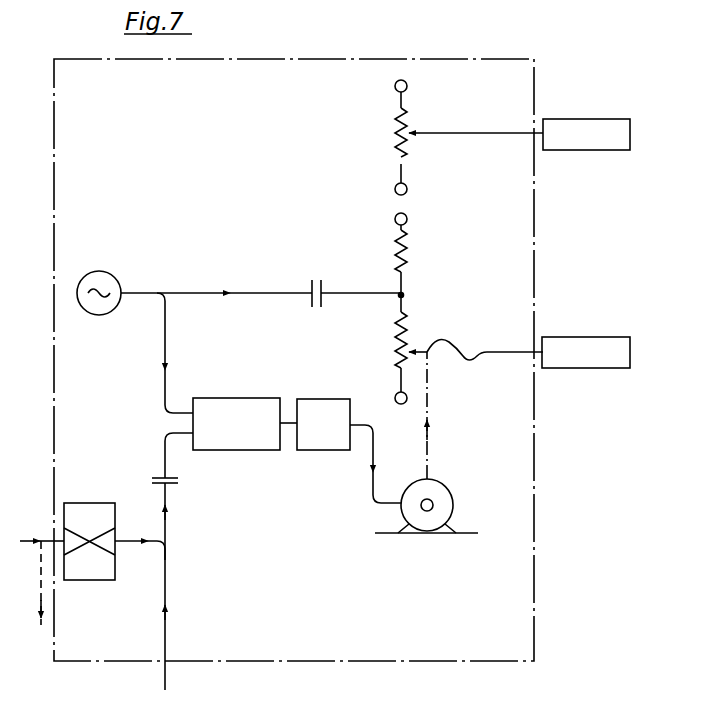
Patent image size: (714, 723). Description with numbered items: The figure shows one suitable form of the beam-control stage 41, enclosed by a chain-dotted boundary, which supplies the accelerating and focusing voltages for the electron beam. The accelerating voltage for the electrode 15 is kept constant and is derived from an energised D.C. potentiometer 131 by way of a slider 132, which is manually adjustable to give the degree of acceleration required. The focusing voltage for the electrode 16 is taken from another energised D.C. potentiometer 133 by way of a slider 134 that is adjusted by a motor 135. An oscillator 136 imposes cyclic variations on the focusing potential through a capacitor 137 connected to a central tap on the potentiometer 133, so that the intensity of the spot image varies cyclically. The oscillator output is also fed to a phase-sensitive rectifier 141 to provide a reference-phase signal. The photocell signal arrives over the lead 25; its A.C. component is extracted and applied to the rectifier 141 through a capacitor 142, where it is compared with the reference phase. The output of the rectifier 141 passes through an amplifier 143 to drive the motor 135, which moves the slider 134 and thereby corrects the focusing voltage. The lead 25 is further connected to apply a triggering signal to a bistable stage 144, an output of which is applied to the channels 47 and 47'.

The beam-control stage 41 is at (294, 360).
The D.C. potentiometer 131 is at (393, 122).
The slider 132 is at (461, 133).
The electrode 15 is at (577, 119).
The D.C. potentiometer 133 is at (406, 260).
The slider 134 is at (426, 352).
The electrode 16 is at (606, 337).
The oscillator 136 is at (128, 276).
The capacitor 137 is at (310, 286).
The phase-sensitive rectifier 141 is at (249, 398).
The amplifier 143 is at (338, 399).
The motor 135 is at (446, 492).
The capacitor 142 is at (158, 478).
The lead 25 is at (167, 580).
The bistable stage 144 is at (104, 492).
The channel 47 is at (42, 528).
The channel 47' is at (32, 598).